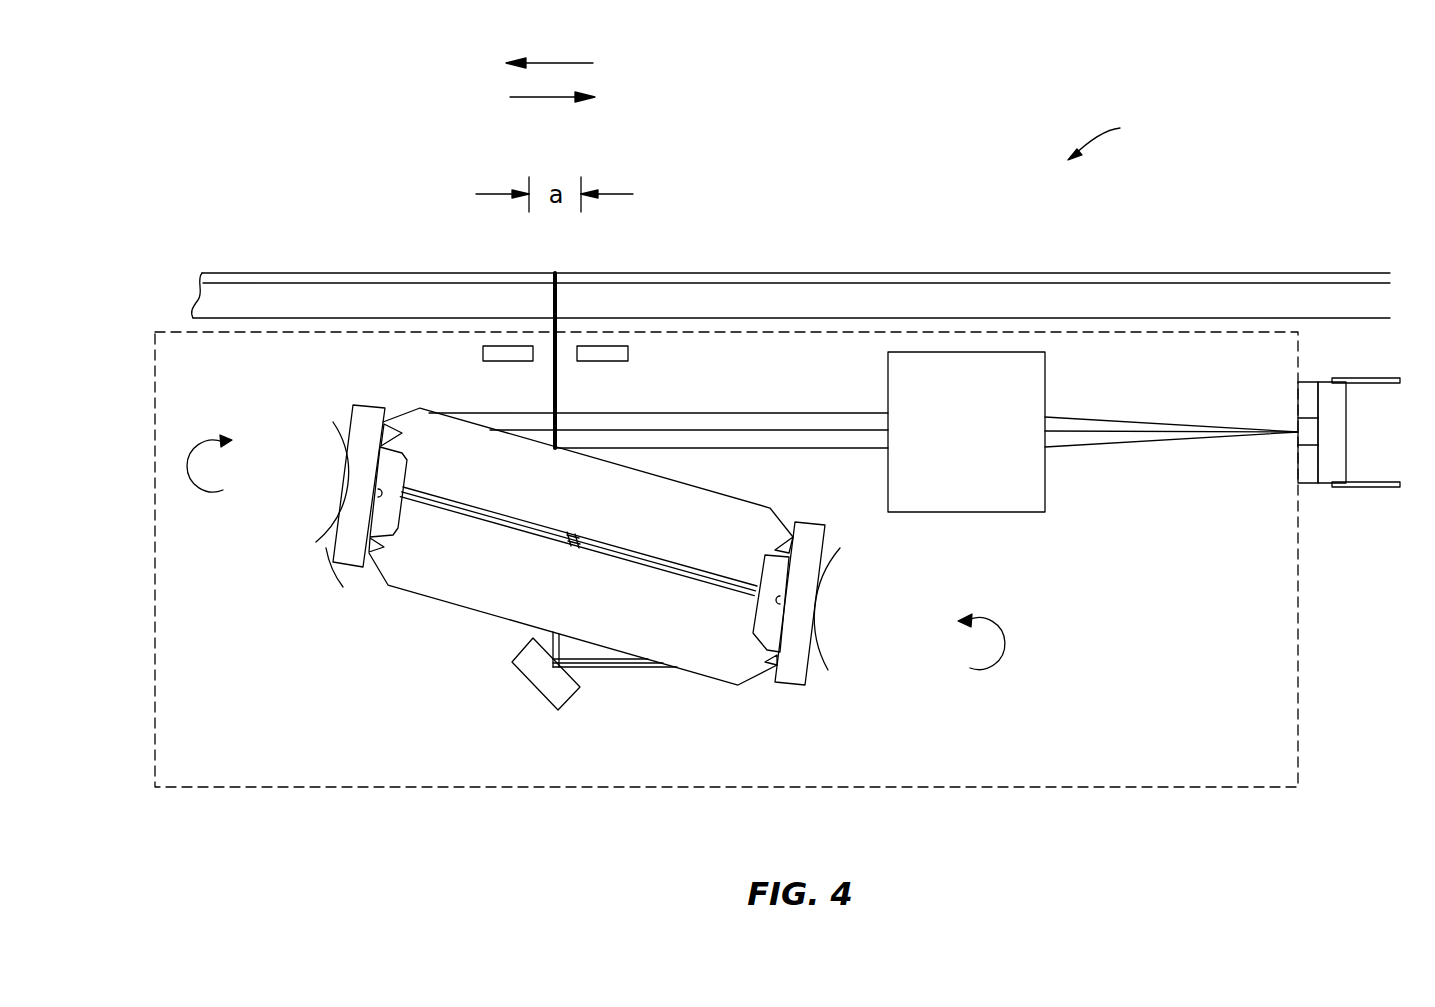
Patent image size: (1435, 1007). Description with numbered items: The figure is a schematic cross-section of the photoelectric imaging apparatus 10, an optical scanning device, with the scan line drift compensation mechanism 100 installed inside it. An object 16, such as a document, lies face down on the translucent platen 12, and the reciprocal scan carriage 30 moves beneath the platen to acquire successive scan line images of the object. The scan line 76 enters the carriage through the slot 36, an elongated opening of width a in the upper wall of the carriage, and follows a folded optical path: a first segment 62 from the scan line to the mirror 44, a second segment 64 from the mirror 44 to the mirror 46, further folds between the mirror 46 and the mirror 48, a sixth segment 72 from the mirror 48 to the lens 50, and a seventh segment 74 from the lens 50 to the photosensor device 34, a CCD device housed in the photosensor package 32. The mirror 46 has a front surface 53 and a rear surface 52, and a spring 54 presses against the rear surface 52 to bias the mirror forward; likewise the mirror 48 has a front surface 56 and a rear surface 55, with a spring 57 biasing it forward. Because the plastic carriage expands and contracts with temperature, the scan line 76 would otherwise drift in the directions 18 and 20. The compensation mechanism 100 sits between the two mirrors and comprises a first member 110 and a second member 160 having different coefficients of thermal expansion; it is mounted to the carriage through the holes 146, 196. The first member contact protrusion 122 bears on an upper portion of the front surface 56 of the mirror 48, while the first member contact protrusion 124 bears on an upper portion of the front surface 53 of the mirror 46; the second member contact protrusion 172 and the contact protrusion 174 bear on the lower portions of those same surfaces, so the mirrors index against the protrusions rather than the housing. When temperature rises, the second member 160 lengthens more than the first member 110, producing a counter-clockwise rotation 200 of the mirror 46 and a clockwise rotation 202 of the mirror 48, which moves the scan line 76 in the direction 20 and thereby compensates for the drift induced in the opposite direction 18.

The photoelectric imaging apparatus 10 is at (1110, 138).
The translucent platen 12 is at (308, 292).
The object 16 is at (828, 273).
The scan line drift direction 18 is at (575, 63).
The scan line drift direction 20 is at (527, 97).
The reciprocal scan carriage 30 is at (1300, 703).
The photosensor package 32 is at (1340, 432).
The photosensor device 34 is at (1297, 425).
The slot 36 is at (572, 375).
The mirror 44 is at (567, 693).
The mirror 46 is at (790, 677).
The mirror 48 is at (350, 562).
The lens 50 is at (985, 512).
The rear surface of the mirror 46 52 is at (808, 678).
The front surface of the mirror 46 53 is at (778, 600).
The spring 54 is at (833, 567).
The rear surface of the mirror 48 55 is at (328, 555).
The front surface of the mirror 48 56 is at (376, 493).
The spring 57 is at (340, 442).
The first segment 62 is at (553, 385).
The second segment 64 is at (622, 668).
The sixth segment 72 is at (758, 413).
The seventh segment 74 is at (1137, 447).
The scan line 76 is at (557, 278).
The scan line drift compensation mechanism 100 is at (581, 554).
The first member 110 is at (588, 473).
The first member contact protrusion 122 is at (394, 418).
The first member contact protrusion 124 is at (789, 535).
The hole 146 is at (572, 532).
The second member 160 is at (573, 619).
The second member contact protrusion 172 is at (372, 565).
The second member contact protrusion 174 is at (767, 667).
The hole 196 is at (573, 560).
The counter-clockwise rotation 200 is at (1003, 643).
The clockwise rotation 202 is at (210, 490).